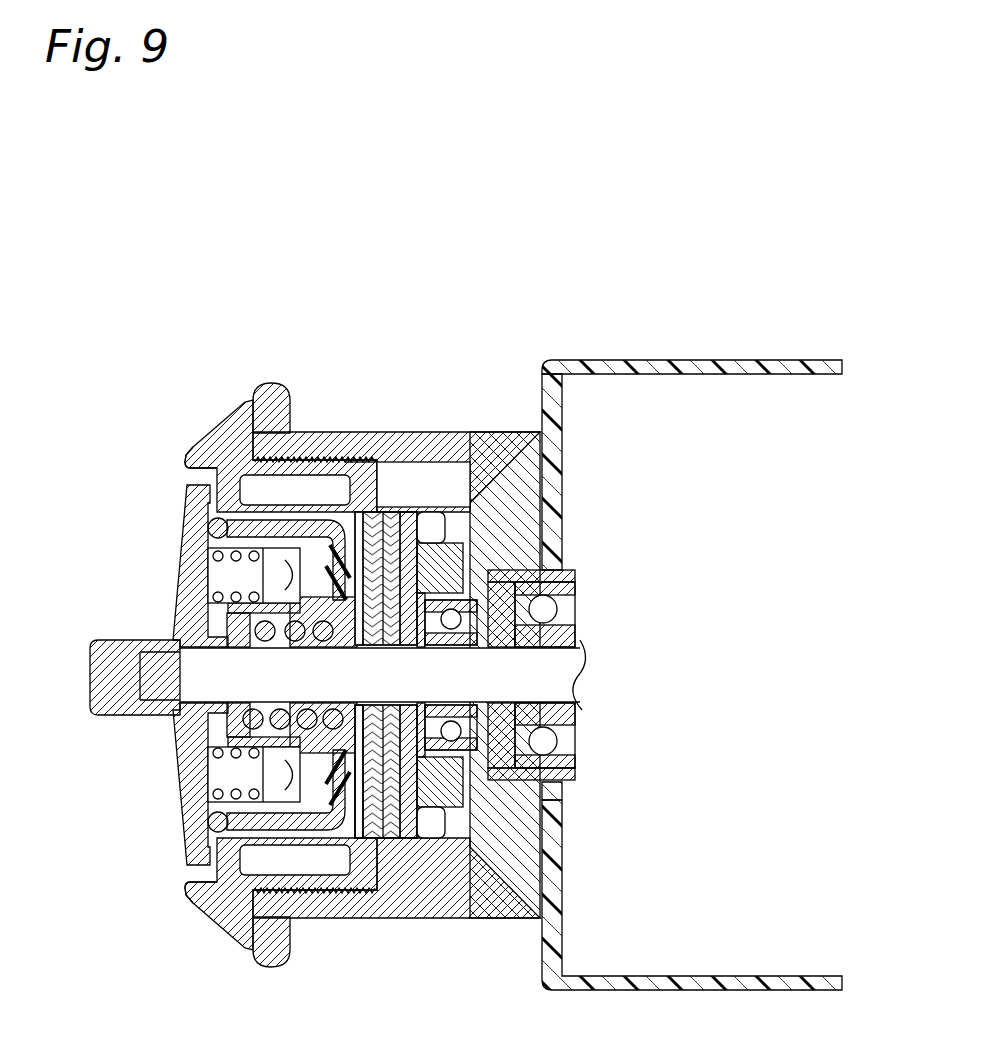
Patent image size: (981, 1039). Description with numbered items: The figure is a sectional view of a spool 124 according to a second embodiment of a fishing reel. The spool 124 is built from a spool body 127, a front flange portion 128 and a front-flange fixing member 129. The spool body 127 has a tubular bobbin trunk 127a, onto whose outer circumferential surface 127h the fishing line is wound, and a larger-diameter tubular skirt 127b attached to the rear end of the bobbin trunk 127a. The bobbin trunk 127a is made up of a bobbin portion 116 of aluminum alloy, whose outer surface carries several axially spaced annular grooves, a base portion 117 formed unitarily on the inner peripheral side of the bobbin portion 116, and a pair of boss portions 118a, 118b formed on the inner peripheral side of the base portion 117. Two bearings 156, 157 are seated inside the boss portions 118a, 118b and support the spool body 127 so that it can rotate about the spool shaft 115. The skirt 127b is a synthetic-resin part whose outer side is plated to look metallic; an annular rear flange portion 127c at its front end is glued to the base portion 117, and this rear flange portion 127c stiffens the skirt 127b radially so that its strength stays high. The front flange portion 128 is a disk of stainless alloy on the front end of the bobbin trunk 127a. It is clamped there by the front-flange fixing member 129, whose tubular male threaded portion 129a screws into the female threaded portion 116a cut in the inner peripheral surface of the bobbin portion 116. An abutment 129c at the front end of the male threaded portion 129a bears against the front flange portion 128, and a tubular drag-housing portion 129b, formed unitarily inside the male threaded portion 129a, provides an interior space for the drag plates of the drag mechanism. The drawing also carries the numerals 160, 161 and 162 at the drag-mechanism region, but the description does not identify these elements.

The spool shaft 115 is at (507, 768).
The bobbin portion 116 is at (411, 482).
The female threaded portion 116a is at (347, 464).
The base portion 117 is at (507, 517).
The boss portion 118a is at (440, 755).
The boss portion 118b is at (557, 803).
The spool 124 is at (397, 601).
The spool body 127 is at (624, 613).
The bobbin trunk 127a is at (397, 626).
The skirt 127b is at (737, 345).
The rear flange portion 127c is at (552, 477).
The outer circumferential surface 127h is at (317, 430).
The front flange portion 128 is at (270, 383).
The front-flange fixing member 129 is at (253, 639).
The male threaded portion 129a is at (273, 493).
The drag-housing portion 129b is at (346, 493).
The abutment 129c is at (203, 448).
The bearing 156 is at (460, 633).
The bearing 157 is at (550, 775).
The coil spring 160 is at (316, 845).
The disc 161 is at (190, 818).
The spring seat 162 is at (373, 832).